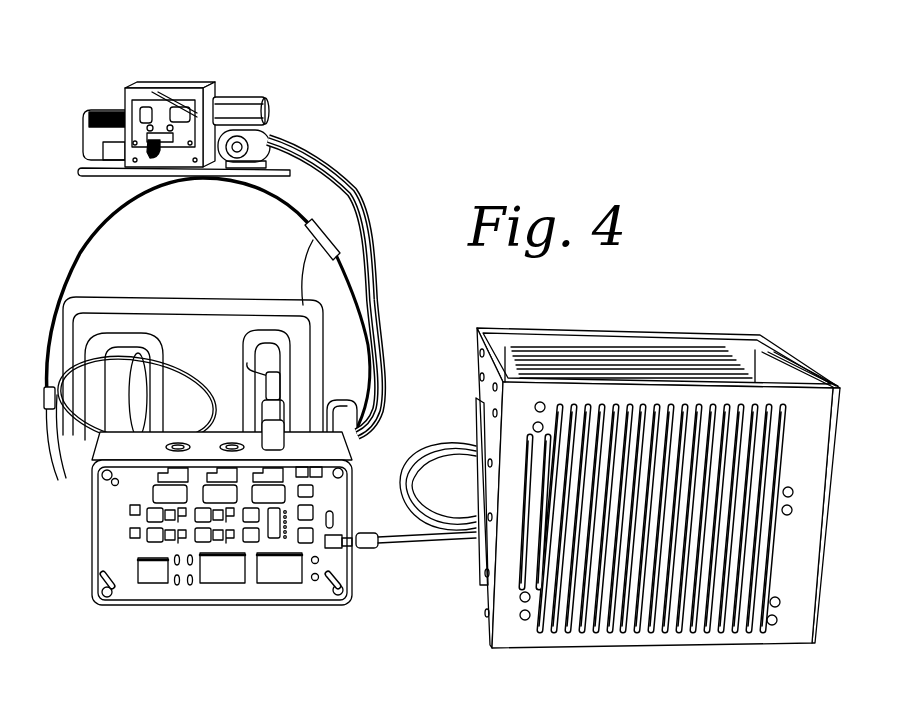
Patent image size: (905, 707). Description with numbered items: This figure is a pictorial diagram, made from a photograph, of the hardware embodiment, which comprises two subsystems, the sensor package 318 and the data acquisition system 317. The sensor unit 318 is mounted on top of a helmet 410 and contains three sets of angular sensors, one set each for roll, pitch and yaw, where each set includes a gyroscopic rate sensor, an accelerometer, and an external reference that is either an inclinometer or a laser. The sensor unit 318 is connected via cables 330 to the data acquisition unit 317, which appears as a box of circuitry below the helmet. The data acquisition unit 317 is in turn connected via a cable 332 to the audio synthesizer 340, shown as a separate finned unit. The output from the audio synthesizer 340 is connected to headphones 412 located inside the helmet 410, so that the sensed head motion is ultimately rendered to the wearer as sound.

The sensor package 318 is at (221, 76).
The cables 330 is at (368, 197).
The helmet 410 is at (85, 250).
The headphones 412 is at (270, 330).
The data acquisition system 317 is at (193, 607).
The cable 332 is at (403, 543).
The audio synthesizer 340 is at (620, 642).